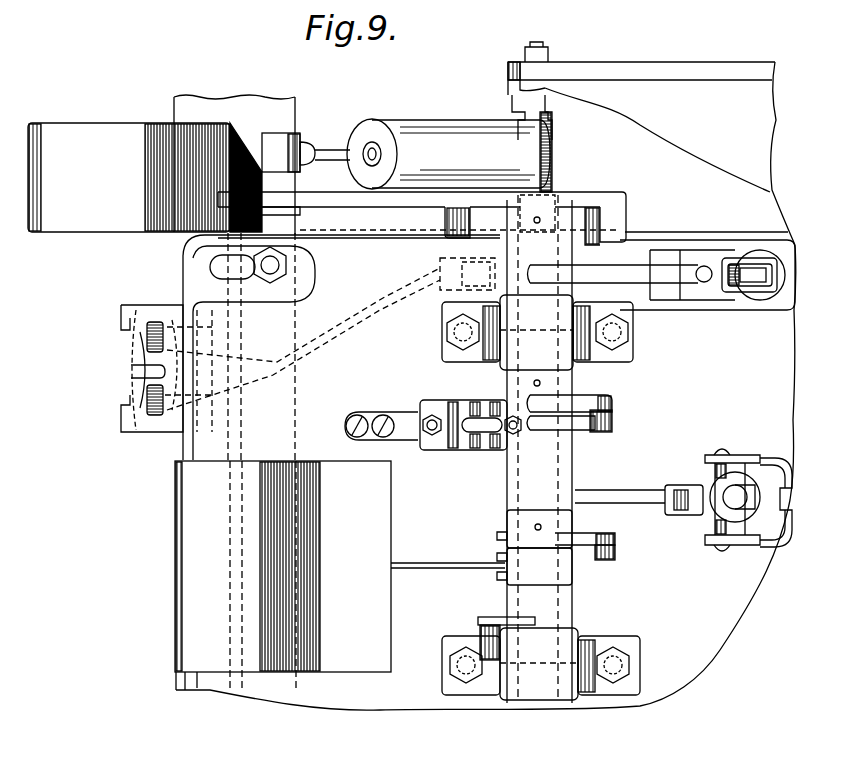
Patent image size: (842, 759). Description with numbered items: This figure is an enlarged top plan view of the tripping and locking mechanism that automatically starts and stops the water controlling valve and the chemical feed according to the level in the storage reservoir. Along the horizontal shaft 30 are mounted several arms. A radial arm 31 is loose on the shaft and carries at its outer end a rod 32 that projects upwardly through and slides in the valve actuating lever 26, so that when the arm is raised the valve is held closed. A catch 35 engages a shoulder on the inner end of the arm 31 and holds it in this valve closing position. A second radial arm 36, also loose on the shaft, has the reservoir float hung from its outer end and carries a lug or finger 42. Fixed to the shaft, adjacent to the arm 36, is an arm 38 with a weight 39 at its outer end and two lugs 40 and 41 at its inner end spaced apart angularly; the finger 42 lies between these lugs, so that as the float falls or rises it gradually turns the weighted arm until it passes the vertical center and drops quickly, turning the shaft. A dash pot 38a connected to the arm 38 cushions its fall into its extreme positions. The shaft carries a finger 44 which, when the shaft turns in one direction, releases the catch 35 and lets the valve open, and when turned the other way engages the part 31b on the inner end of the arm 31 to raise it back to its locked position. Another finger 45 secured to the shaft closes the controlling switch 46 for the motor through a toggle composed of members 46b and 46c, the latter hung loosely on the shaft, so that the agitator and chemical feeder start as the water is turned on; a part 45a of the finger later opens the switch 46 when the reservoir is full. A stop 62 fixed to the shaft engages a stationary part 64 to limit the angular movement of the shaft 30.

The valve actuating lever 26 is at (776, 532).
The horizontal shaft 30 is at (557, 690).
The radial arm 31 is at (637, 500).
The part on inner end of arm 31b is at (620, 397).
The rod 32 is at (738, 470).
The catch 35 is at (492, 428).
The second radial arm 36 is at (637, 283).
The arm 38 is at (378, 197).
The dash pot 38a is at (426, 140).
The weight 39 is at (107, 210).
The lug 40 is at (450, 227).
The lug 41 is at (623, 222).
The lug or finger 42 is at (632, 248).
The finger 44 is at (620, 419).
The finger 45 is at (606, 548).
The part of finger 45a is at (503, 548).
The controlling switch 46 is at (283, 566).
The toggle member 46b is at (462, 569).
The toggle member 46c is at (495, 558).
The finger or stop 62 is at (483, 634).
The stationary part 64 is at (567, 646).